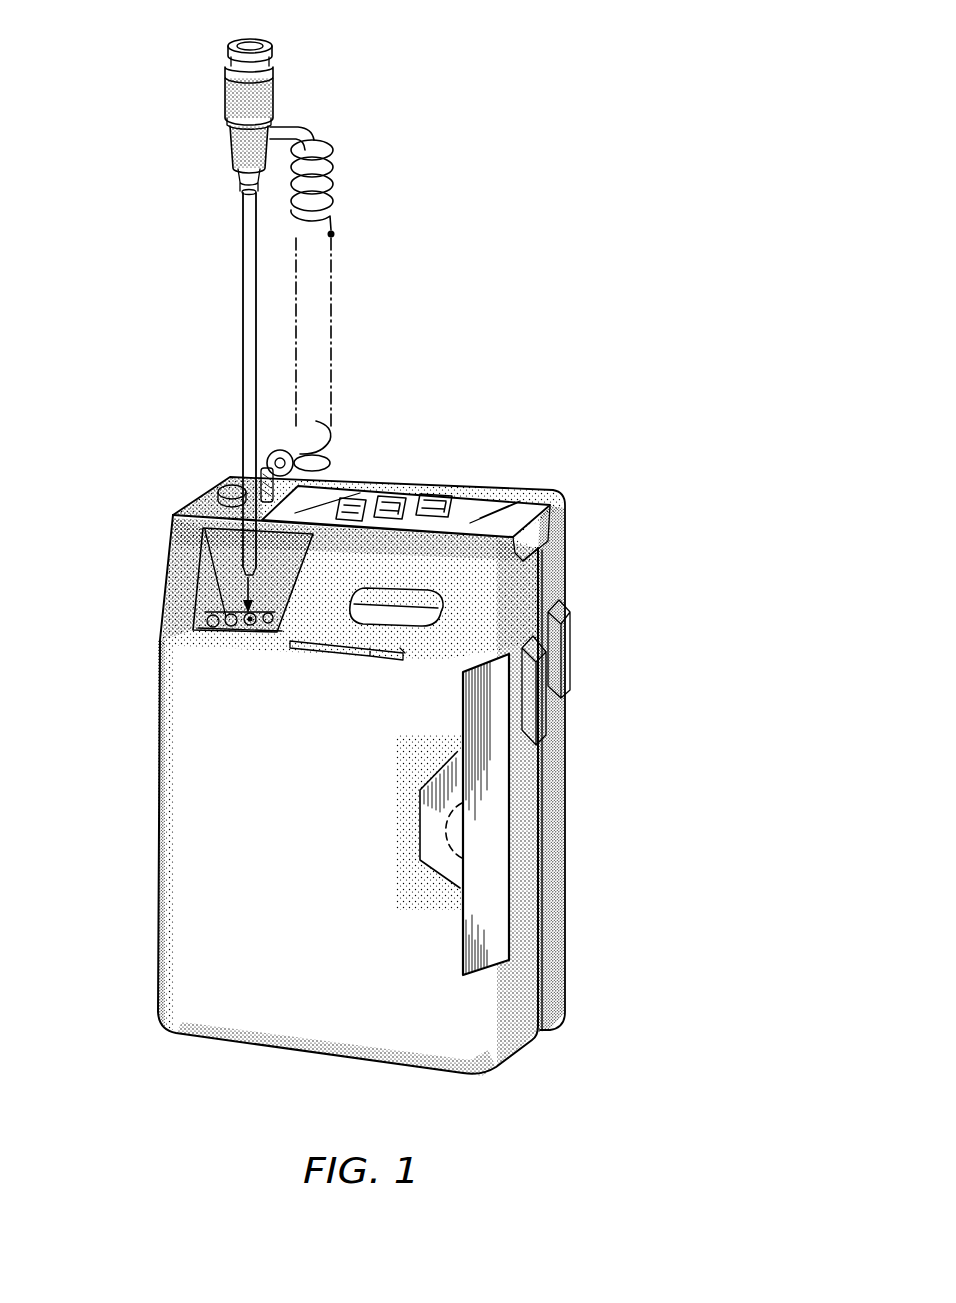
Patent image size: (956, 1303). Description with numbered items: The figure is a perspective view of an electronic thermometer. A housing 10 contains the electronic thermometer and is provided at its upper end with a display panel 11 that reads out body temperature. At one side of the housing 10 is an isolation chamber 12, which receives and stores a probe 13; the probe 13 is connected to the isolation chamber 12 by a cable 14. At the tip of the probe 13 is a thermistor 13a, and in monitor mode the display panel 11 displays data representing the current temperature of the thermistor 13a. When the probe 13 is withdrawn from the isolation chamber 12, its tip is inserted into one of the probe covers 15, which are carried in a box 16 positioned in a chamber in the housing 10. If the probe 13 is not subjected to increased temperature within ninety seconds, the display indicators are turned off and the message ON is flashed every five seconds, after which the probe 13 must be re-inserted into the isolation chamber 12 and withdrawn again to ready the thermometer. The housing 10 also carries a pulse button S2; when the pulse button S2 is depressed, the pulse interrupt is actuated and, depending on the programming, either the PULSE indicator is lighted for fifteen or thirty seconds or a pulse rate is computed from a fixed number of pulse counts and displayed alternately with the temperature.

The housing 10 is at (142, 808).
The display panel 11 is at (491, 503).
The isolation chamber 12 is at (226, 494).
The probe 13 is at (243, 292).
The thermistor 13a is at (247, 566).
The cable 14 is at (336, 217).
The probe covers 15 is at (222, 614).
The box 16 is at (476, 786).
The pulse button S2 is at (442, 606).